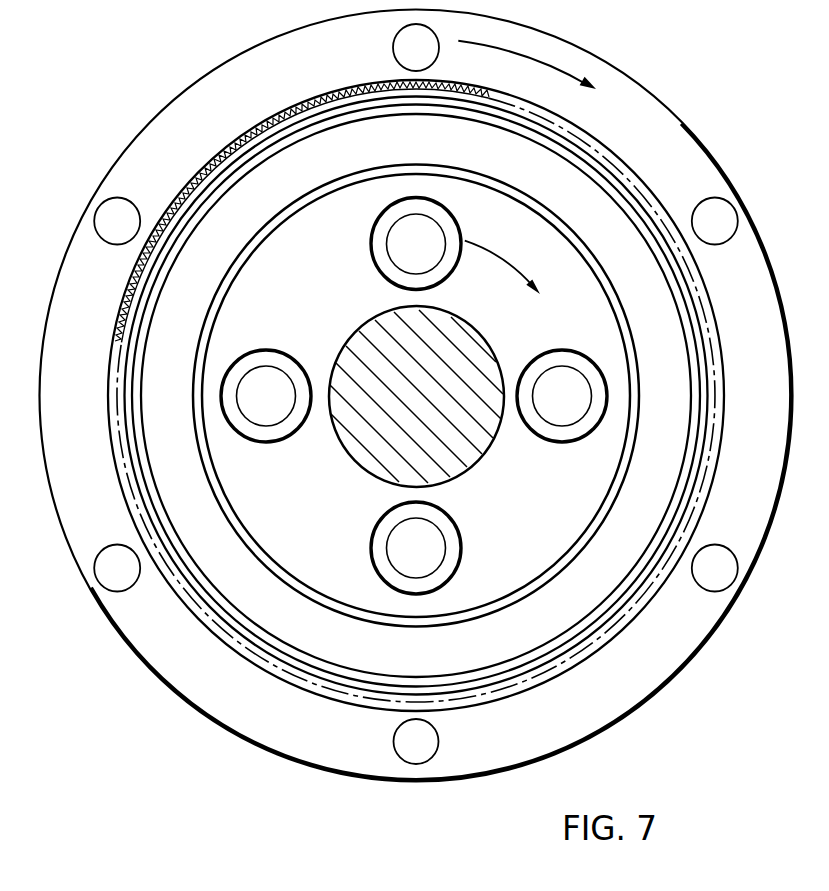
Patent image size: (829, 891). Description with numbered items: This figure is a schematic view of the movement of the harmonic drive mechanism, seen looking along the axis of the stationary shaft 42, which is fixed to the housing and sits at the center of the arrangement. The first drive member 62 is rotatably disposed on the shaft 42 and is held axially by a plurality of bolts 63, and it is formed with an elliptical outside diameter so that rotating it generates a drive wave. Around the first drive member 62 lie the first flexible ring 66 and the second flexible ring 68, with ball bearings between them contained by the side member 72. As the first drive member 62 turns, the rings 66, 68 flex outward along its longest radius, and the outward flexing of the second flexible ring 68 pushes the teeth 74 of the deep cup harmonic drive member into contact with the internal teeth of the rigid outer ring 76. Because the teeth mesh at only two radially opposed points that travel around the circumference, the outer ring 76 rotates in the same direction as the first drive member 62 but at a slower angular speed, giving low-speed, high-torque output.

The stationary shaft 42 is at (456, 389).
The first drive member 62 is at (530, 526).
The bolts 63 is at (400, 253).
The first flexible ring 66 is at (252, 245).
The second flexible ring 68 is at (217, 187).
The side member 72 is at (201, 267).
The teeth 74 is at (262, 137).
The rigid outer ring 76 is at (622, 97).